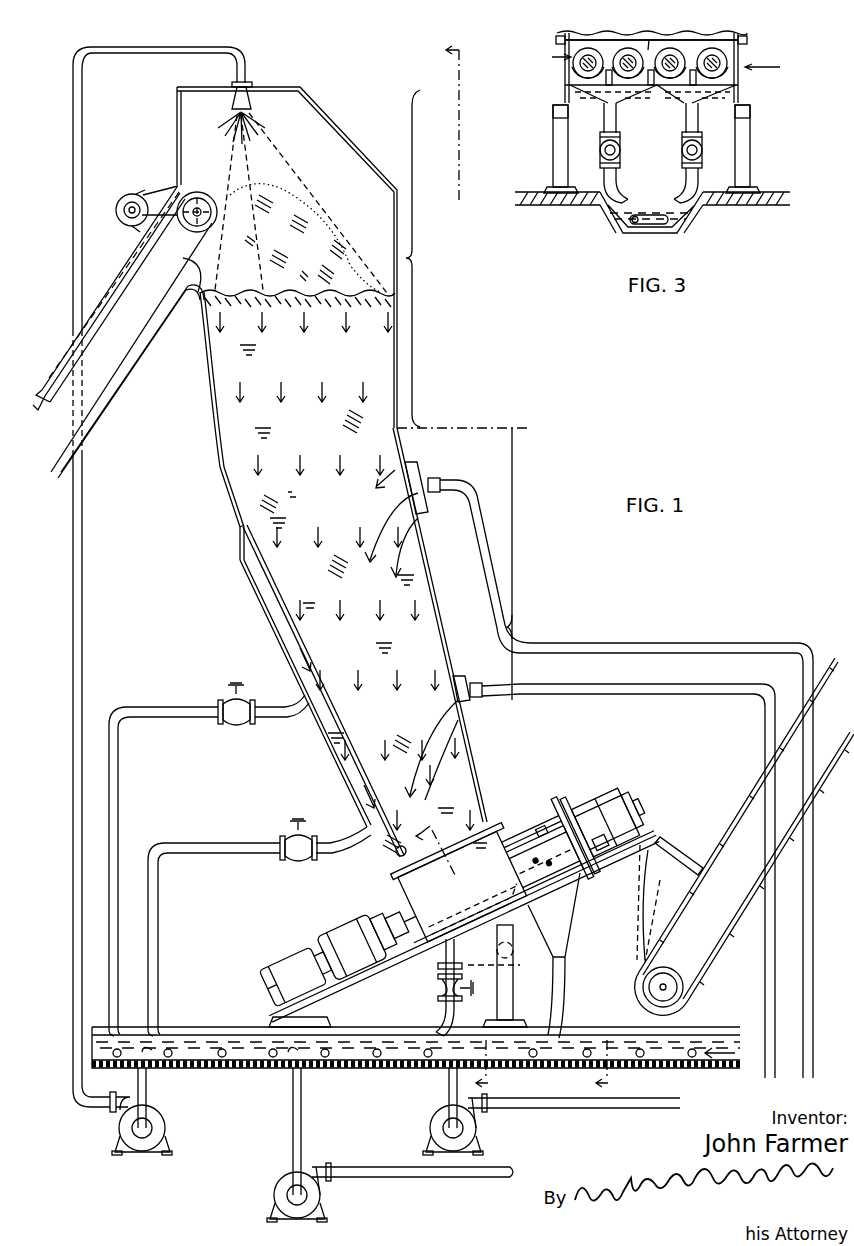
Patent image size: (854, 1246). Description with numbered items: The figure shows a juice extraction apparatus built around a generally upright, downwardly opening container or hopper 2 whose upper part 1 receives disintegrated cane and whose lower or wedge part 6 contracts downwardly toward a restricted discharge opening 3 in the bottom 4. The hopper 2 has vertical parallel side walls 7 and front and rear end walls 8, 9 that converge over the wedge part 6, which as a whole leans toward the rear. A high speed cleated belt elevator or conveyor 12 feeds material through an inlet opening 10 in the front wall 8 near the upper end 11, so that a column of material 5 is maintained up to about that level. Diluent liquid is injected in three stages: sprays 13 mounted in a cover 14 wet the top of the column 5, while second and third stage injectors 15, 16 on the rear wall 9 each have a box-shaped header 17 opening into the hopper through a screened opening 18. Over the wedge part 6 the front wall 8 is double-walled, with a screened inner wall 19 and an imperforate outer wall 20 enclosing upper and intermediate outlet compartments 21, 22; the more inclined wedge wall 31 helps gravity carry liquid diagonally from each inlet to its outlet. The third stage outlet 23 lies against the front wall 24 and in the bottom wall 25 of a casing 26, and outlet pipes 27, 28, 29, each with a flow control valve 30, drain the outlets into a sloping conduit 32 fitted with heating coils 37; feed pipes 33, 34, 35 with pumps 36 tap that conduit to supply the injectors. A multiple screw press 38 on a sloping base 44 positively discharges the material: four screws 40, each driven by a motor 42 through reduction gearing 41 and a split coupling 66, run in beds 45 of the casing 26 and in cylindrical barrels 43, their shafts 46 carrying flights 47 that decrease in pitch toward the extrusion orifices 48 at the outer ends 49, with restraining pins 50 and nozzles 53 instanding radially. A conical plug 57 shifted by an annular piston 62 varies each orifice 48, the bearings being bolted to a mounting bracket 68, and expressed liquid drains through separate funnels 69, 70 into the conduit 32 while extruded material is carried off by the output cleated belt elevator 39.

In FIG. 1, the upper part of container 1 is at (422, 258).
In FIG. 1, the container or hopper 2 is at (218, 466).
In FIG. 3, the container or hopper 2 is at (700, 33).
In FIG. 1, the discharge opening 3 is at (458, 951).
In FIG. 3, the discharge opening 3 is at (641, 34).
In FIG. 1, the container bottom 4 is at (492, 834).
In FIG. 1, the column of material 5 is at (315, 505).
In FIG. 1, the lower or wedge part of hopper 6 is at (520, 564).
In FIG. 1, the side walls 7 is at (297, 433).
In FIG. 3, the side walls 7 is at (562, 34).
In FIG. 1, the front end wall 8 is at (210, 386).
In FIG. 3, the front end wall 8 is at (615, 34).
In FIG. 1, the rear end wall 9 is at (405, 449).
In FIG. 1, the inlet opening 10 is at (198, 296).
In FIG. 1, the upper end of hopper 11 is at (255, 86).
In FIG. 1, the cleated belt elevator or conveyor 12 is at (146, 340).
In FIG. 1, the sprays (first stage injector) 13 is at (254, 108).
In FIG. 1, the cover 14 is at (222, 85).
In FIG. 1, the second stage injector 15 is at (441, 478).
In FIG. 1, the third stage injector 16 is at (473, 684).
In FIG. 1, the header 17 is at (424, 466).
In FIG. 1, the perforated plate or screened opening 18 is at (400, 484).
In FIG. 1, the screened inner wall 19 is at (312, 672).
In FIG. 1, the imperforate outer wall 20 is at (278, 633).
In FIG. 1, the upper outlet compartment 21 is at (260, 583).
In FIG. 1, the intermediate outlet compartment 22 is at (350, 784).
In FIG. 1, the third stage outlet 23 is at (452, 915).
In FIG. 1, the front wall of casing 24 is at (420, 892).
In FIG. 1, the bottom wall of casing 25 is at (482, 905).
In FIG. 3, the bottom wall of casing 25 is at (651, 45).
In FIG. 1, the casing 26 is at (501, 843).
In FIG. 3, the casing 26 is at (565, 88).
In FIG. 1, the outlet pipe 27 is at (275, 706).
In FIG. 1, the outlet pipe 28 is at (330, 842).
In FIG. 1, the outlet pipe 29 is at (440, 970).
In FIG. 3, the outlet pipe 29 is at (617, 122).
In FIG. 1, the flow control valve 30 is at (236, 724).
In FIG. 3, the flow control valve 30 is at (620, 150).
In FIG. 1, the wedge wall 31 is at (396, 853).
In FIG. 1, the conduit, sump or trough 32 is at (380, 1070).
In FIG. 3, the conduit, sump or trough 32 is at (685, 226).
In FIG. 1, the feed pipe 33 is at (150, 1082).
In FIG. 1, the feed pipe 34 is at (305, 1118).
In FIG. 1, the feed pipe 35 is at (445, 1085).
In FIG. 1, the pump 36 is at (170, 1128).
In FIG. 1, the heating coils 37 is at (340, 1060).
In FIG. 3, the heating coils 37 is at (655, 230).
In FIG. 1, the multiple screw press 38 is at (539, 820).
In FIG. 3, the multiple screw press 38 is at (762, 66).
In FIG. 1, the output cleated belt elevator 39 is at (752, 882).
In FIG. 3, the screws 40 is at (551, 56).
In FIG. 1, the reduction gearing 41 is at (355, 927).
In FIG. 1, the motor 42 is at (292, 962).
In FIG. 1, the cylindrical barrel 43 is at (517, 873).
In FIG. 1, the sloping base 44 is at (515, 940).
In FIG. 3, the sloping base 44 is at (751, 140).
In FIG. 1, the cylindrically concave bed 45 is at (504, 880).
In FIG. 3, the cylindrically concave bed 45 is at (588, 80).
In FIG. 1, the screw shaft or stem 46 is at (405, 925).
In FIG. 3, the screw shaft or stem 46 is at (587, 52).
In FIG. 3, the flights or threads 47 is at (614, 52).
In FIG. 1, the extrusion orifice 48 is at (580, 808).
In FIG. 1, the outer end of barrel 49 is at (566, 815).
In FIG. 1, the pins or lugs 50 is at (565, 849).
In FIG. 1, the nozzles 53 is at (542, 828).
In FIG. 1, the tapered or conical plug 57 is at (595, 840).
In FIG. 1, the annular piston 62 is at (610, 812).
In FIG. 1, the split coupling 66 is at (390, 912).
In FIG. 1, the mounting bracket 68 is at (632, 822).
In FIG. 1, the funnel 69 is at (568, 925).
In FIG. 1, the funnel 70 is at (670, 856).